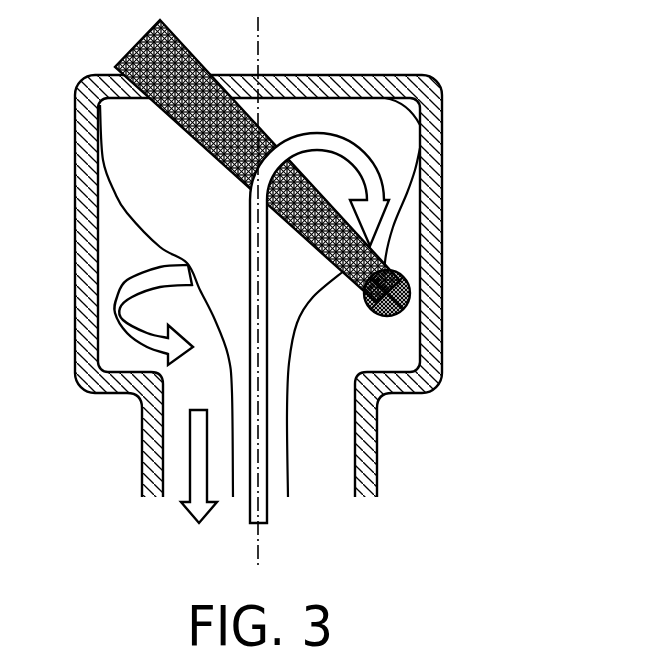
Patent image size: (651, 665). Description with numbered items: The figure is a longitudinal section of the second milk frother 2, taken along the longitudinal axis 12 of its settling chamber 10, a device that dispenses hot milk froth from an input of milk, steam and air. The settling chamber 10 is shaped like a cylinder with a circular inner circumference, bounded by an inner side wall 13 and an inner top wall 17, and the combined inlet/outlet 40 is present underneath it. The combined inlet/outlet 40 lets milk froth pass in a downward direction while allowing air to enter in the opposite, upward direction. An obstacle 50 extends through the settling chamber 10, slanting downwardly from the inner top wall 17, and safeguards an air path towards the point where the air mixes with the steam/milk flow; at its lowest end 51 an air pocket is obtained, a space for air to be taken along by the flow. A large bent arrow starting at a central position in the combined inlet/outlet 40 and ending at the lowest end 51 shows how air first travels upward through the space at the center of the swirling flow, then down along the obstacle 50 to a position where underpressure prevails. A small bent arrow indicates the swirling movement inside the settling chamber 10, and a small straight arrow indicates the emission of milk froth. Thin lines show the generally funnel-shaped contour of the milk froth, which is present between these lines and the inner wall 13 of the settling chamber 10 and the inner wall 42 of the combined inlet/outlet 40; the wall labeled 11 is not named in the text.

The second milk frother 2 is at (314, 309).
The settling chamber 10 is at (120, 252).
The chamber inner wall 11 is at (120, 277).
The longitudinal axis 12 is at (260, 37).
The inner side wall 13 is at (107, 195).
The inner top wall 17 is at (413, 123).
The combined inlet/outlet 40 is at (332, 427).
The inner wall of the combined inlet/outlet 42 is at (355, 472).
The obstacle 50 is at (138, 42).
The lowest end of the obstacle 51 is at (398, 313).